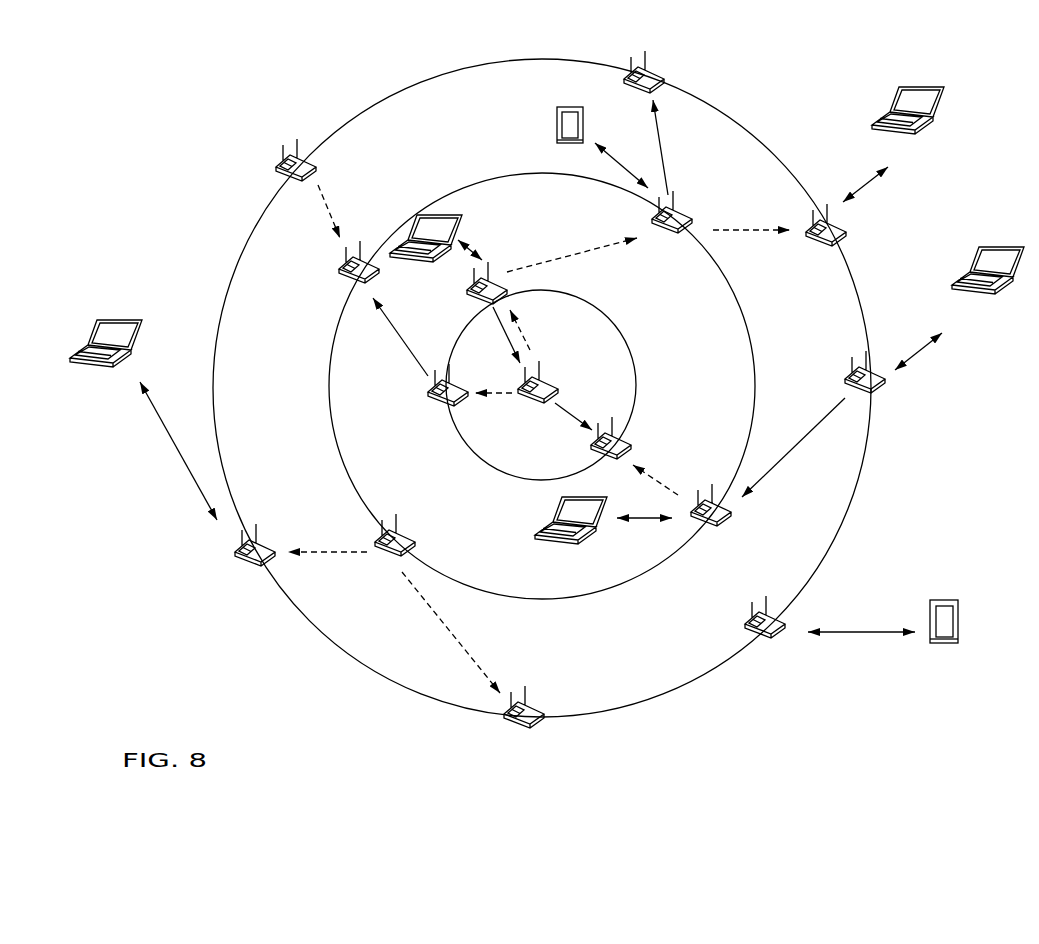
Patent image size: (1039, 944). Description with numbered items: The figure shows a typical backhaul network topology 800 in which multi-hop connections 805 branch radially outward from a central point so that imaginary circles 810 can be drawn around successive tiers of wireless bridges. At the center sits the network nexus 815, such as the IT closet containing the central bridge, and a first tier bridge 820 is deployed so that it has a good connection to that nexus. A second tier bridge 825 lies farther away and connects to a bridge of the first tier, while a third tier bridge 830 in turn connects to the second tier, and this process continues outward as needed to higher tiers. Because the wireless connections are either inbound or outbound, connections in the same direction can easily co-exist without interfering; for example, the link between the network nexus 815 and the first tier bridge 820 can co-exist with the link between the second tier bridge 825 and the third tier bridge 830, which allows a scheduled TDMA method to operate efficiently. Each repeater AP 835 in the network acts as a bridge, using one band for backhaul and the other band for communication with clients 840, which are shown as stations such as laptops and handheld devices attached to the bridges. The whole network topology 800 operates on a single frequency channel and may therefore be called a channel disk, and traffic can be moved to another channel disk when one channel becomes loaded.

The backhaul network topology 800 is at (742, 730).
The multi-hop connections 805 is at (648, 278).
The imaginary circles 810 is at (452, 71).
The network nexus 815 is at (528, 404).
The first tier bridge 820 is at (450, 407).
The second tier bridge 825 is at (381, 557).
The third tier bridge 830 is at (272, 561).
The repeater AP 835 is at (468, 300).
The clients 840 is at (125, 318).